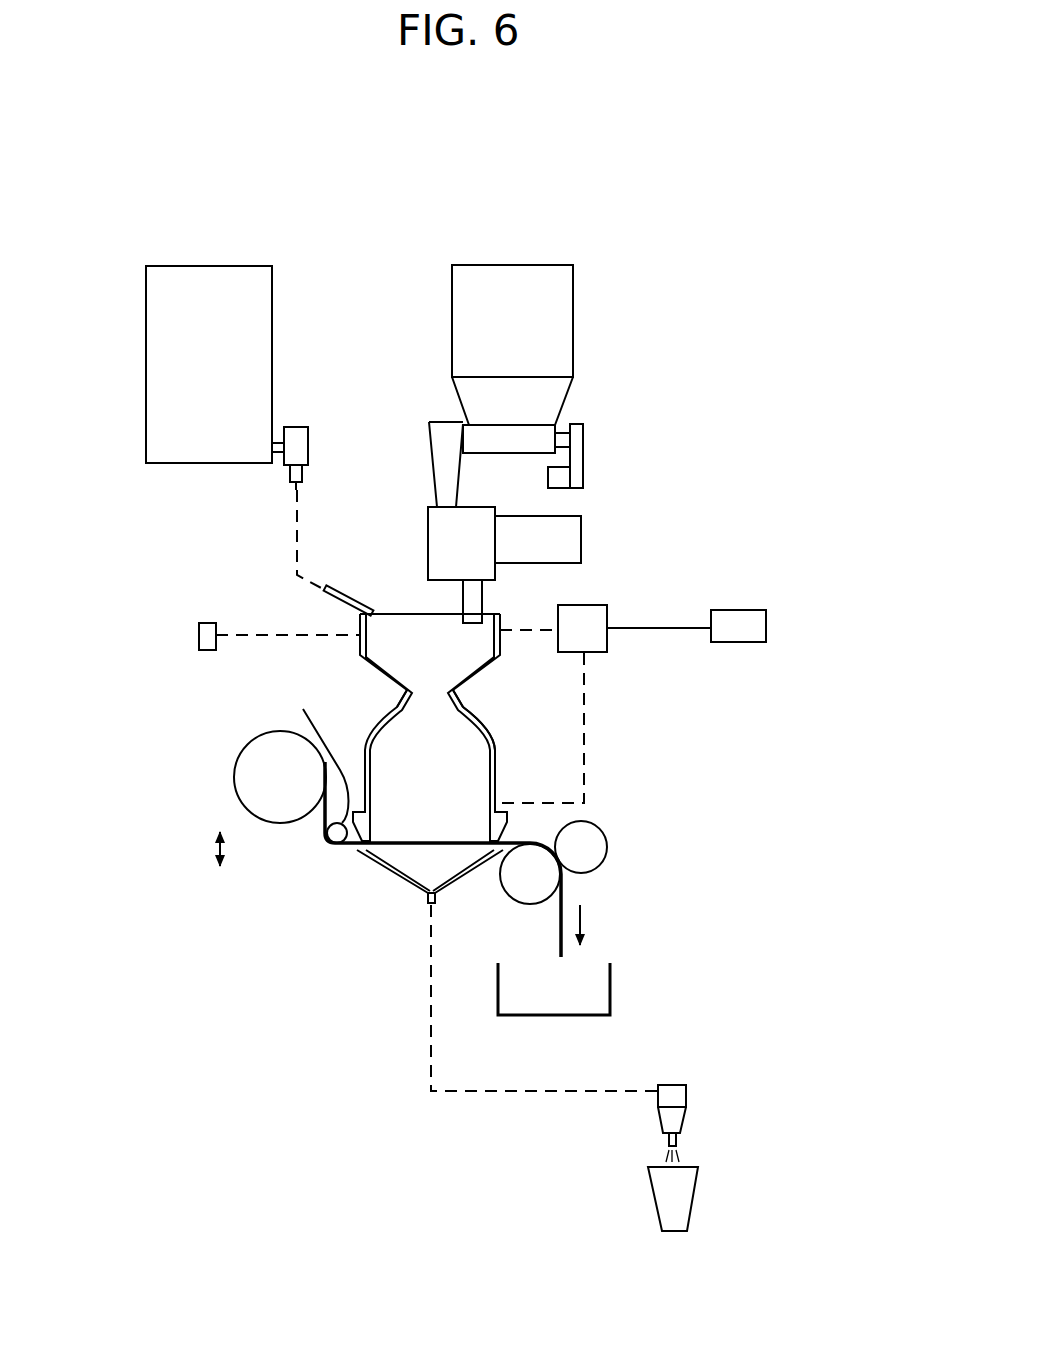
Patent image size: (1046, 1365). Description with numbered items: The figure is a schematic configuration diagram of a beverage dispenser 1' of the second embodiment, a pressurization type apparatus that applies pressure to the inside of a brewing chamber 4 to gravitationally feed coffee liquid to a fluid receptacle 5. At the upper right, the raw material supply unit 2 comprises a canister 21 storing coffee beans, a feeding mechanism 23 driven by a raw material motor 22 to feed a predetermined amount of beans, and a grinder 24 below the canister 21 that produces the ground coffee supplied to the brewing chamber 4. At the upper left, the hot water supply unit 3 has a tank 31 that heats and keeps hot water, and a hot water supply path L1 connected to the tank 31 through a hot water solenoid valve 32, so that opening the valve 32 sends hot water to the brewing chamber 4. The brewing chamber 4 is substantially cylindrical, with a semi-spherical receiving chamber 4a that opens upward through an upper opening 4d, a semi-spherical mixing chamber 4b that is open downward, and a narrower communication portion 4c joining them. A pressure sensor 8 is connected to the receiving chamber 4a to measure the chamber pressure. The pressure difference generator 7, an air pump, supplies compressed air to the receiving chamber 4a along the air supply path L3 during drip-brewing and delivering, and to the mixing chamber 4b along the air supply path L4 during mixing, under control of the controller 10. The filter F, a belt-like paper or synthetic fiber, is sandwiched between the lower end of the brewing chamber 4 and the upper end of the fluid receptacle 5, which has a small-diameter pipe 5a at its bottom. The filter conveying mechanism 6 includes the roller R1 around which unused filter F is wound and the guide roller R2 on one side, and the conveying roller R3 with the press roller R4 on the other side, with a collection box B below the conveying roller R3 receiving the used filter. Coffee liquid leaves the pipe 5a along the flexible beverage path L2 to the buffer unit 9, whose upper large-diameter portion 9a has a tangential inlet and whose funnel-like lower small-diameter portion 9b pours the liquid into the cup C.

The beverage dispenser 1' is at (292, 168).
The raw material supply unit 2 is at (594, 296).
The canister 21 is at (573, 347).
The raw material motor 22 is at (576, 478).
The feeding mechanism 23 is at (545, 420).
The grinder 24 is at (581, 540).
The hot water supply unit 3 is at (154, 256).
The tank 31 is at (146, 328).
The hot water solenoid valve 32 is at (299, 427).
The brewing chamber 4 is at (621, 679).
The receiving chamber 4a is at (465, 675).
The mixing chamber 4b is at (473, 720).
The communication portion 4c is at (411, 692).
The upper opening 4d is at (416, 612).
The fluid receptacle 5 is at (369, 872).
The pipe 5a is at (427, 901).
The filter conveying mechanism 6 is at (679, 826).
The pressure difference generator 7 is at (610, 608).
The pressure sensor 8 is at (199, 635).
The buffer unit 9 is at (768, 1128).
The large-diameter portion 9a is at (686, 1092).
The small-diameter portion 9b is at (683, 1125).
The controller 10 is at (738, 610).
The hot water supply path L1 is at (298, 504).
The beverage path L2 is at (422, 948).
The air supply path for applying pressure L3 is at (519, 630).
The air supply path for mixing L4 is at (587, 762).
The roller R1 is at (240, 753).
The guide roller R2 is at (316, 762).
The conveying roller R3 is at (512, 902).
The press roller R4 is at (598, 833).
The filter F is at (323, 828).
The collection box B is at (612, 977).
The cup C is at (698, 1193).